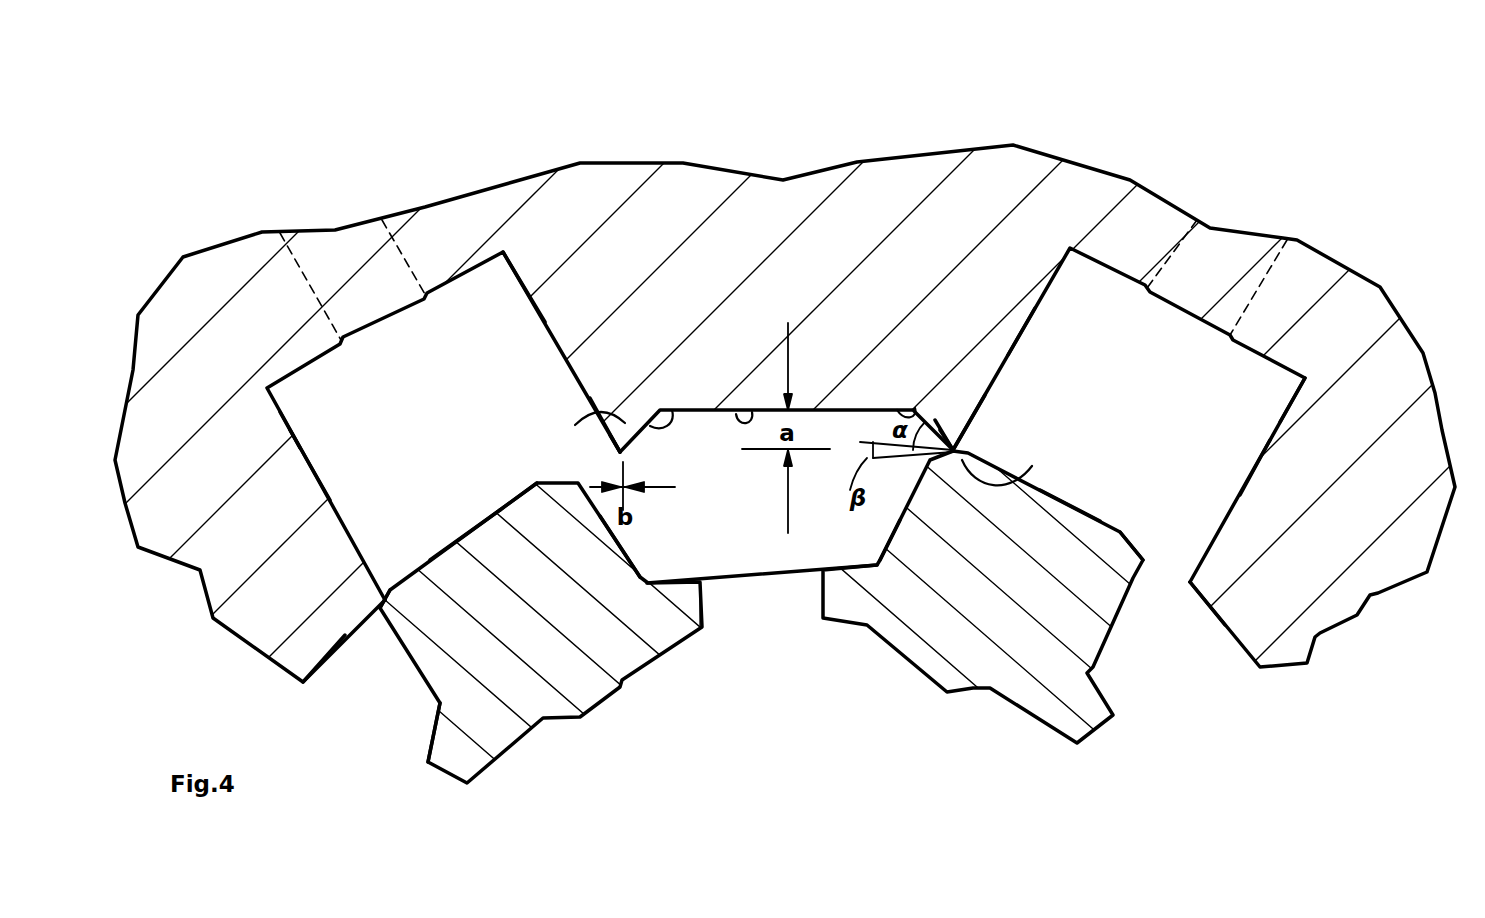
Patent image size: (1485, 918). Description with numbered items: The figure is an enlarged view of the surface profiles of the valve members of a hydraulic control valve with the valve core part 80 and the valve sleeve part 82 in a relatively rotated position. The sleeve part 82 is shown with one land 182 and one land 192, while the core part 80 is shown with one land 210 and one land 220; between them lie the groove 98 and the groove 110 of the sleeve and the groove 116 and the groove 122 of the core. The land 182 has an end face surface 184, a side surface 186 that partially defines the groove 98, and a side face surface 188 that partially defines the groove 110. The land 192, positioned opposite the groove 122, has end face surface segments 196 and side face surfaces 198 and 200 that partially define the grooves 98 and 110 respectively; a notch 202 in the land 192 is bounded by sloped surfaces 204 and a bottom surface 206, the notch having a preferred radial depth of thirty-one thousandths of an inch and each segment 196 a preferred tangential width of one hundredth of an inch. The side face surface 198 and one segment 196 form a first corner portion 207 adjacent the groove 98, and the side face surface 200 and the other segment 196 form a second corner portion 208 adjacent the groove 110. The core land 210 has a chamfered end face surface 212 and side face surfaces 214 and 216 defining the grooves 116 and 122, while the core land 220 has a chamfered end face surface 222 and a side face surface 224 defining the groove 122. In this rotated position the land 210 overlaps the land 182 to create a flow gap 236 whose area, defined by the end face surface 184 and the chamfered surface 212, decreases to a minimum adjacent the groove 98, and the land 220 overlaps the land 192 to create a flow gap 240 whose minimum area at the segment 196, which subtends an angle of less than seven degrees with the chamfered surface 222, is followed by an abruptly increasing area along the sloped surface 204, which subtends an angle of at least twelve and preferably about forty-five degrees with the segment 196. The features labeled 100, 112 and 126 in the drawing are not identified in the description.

The valve core part 80 is at (993, 585).
The valve sleeve part 82 is at (946, 236).
The groove 98 is at (393, 361).
The boundary of first tooth 100 is at (358, 258).
The groove 110 is at (1123, 391).
The boundary of second tooth 112 is at (1218, 258).
The groove 116 is at (356, 726).
The groove 122 is at (728, 565).
The lower channel 126 is at (736, 621).
The land 182 is at (280, 505).
The end face surface 184 is at (335, 648).
The side surface 186 is at (290, 423).
The side face surface 188 is at (1287, 417).
The land 192 is at (592, 287).
The end face surface segment 196 is at (957, 448).
The side face surface 198 is at (527, 287).
The side face surface 200 is at (1010, 355).
The notch 202 is at (816, 438).
The sloped surface 204 is at (672, 410).
The bottom surface 206 is at (752, 412).
The first corner portion 207 is at (579, 428).
The second corner portion 208 is at (952, 416).
The land 210 is at (493, 550).
The end face surface 212 is at (515, 492).
The side face surface 214 is at (437, 703).
The side face surface 216 is at (632, 557).
The land 220 is at (1080, 560).
The end face surface 222 is at (1080, 500).
The side face surface 224 is at (893, 533).
The flow gap 236 is at (390, 587).
The flow gap 240 is at (1018, 465).